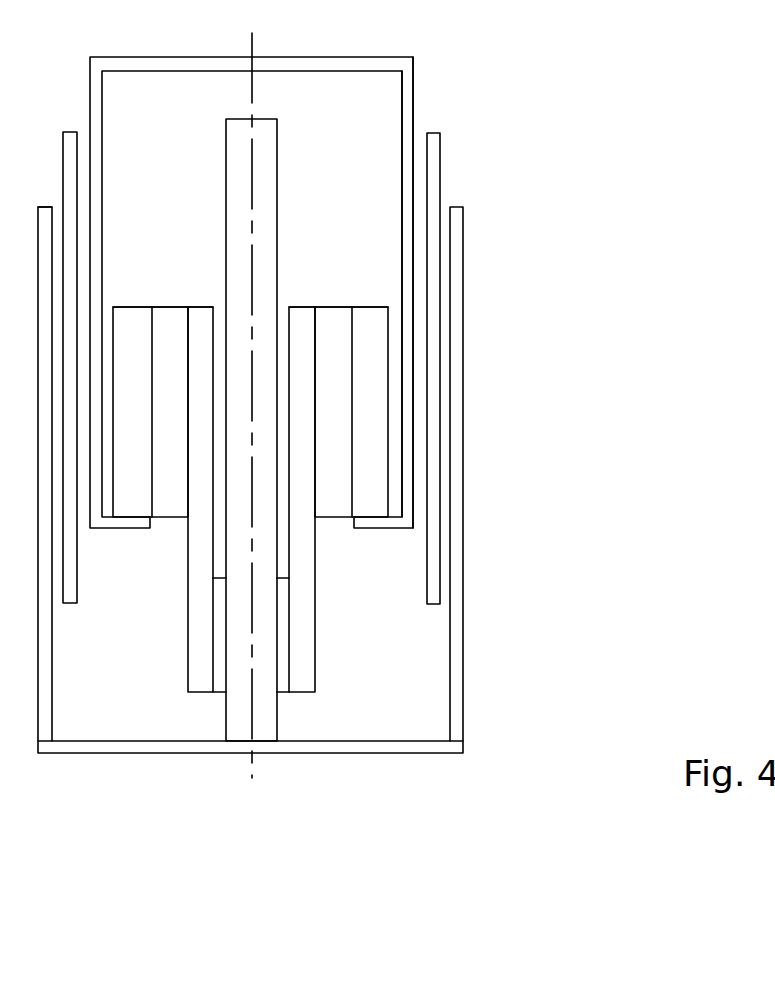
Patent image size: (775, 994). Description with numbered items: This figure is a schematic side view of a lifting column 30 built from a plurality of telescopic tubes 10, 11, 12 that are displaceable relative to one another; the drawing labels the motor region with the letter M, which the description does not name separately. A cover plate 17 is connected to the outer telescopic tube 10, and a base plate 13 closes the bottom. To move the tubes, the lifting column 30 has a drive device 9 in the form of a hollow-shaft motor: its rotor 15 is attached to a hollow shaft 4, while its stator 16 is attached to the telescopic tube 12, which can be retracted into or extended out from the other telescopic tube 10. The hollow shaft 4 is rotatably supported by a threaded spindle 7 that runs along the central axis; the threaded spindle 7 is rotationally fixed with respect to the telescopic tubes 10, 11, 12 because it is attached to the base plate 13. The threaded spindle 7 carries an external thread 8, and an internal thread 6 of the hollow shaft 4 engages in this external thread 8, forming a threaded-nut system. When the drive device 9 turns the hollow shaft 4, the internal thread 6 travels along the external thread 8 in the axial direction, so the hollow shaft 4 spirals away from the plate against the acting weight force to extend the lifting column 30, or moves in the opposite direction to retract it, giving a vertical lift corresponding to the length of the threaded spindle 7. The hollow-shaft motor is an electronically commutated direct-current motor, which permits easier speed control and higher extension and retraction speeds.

The lifting column 30 is at (507, 100).
The motor M is at (258, 83).
The cover plate 17 is at (362, 63).
The threaded spindle 7 is at (265, 188).
The telescopic tube 12 is at (403, 270).
The drive device 9 is at (348, 394).
The stator 16 is at (375, 425).
The rotor 15 is at (327, 458).
The external thread 8 is at (275, 558).
The telescopic tube 11 is at (432, 567).
The internal thread 6 is at (285, 620).
The hollow shaft 4 is at (305, 640).
The telescopic tube 10 is at (460, 673).
The base plate 13 is at (405, 753).